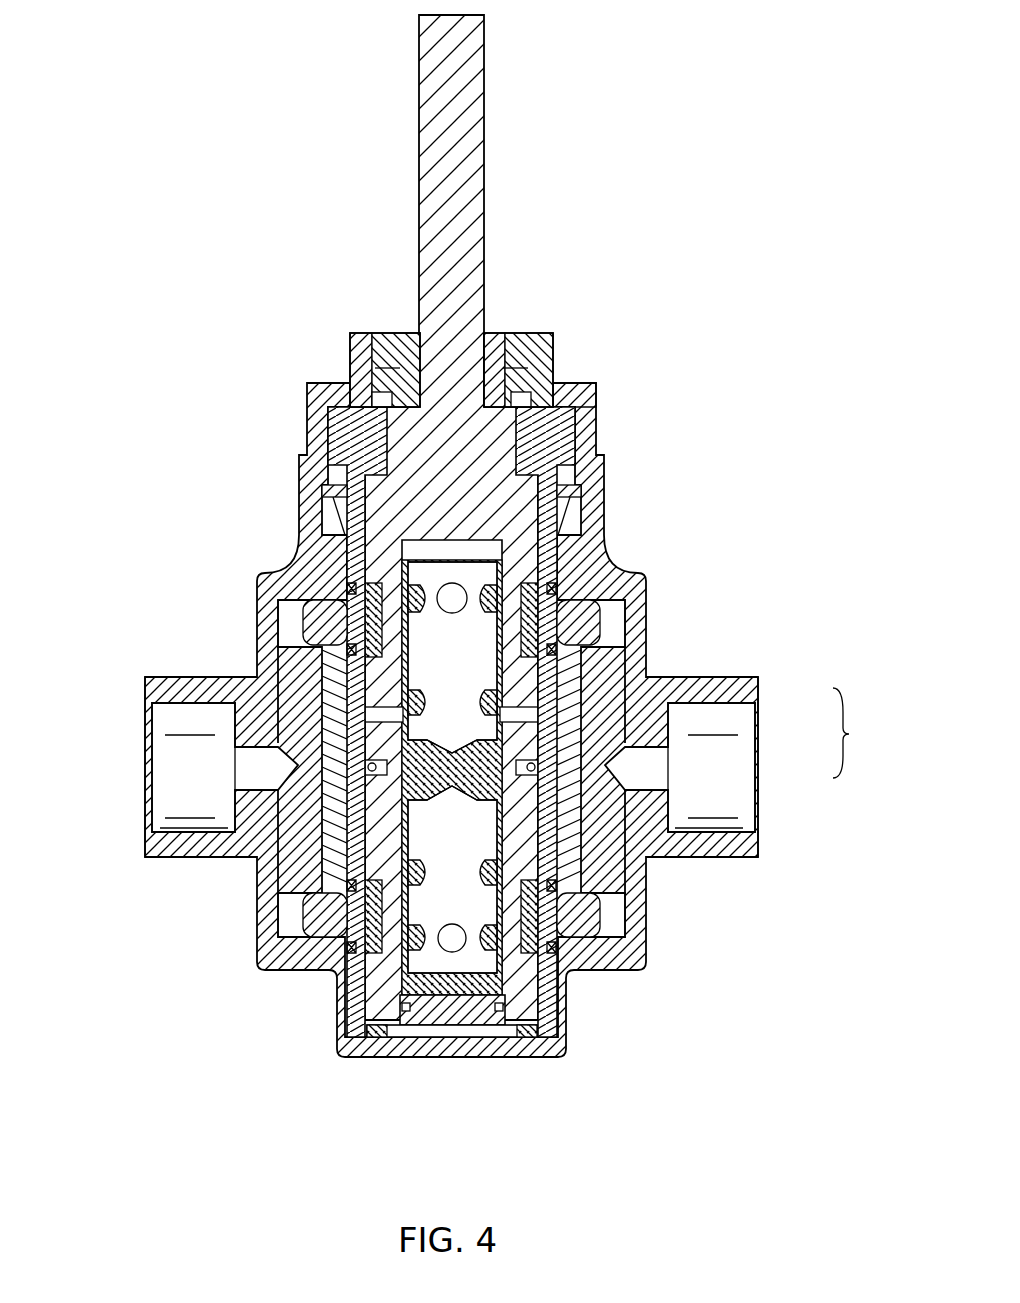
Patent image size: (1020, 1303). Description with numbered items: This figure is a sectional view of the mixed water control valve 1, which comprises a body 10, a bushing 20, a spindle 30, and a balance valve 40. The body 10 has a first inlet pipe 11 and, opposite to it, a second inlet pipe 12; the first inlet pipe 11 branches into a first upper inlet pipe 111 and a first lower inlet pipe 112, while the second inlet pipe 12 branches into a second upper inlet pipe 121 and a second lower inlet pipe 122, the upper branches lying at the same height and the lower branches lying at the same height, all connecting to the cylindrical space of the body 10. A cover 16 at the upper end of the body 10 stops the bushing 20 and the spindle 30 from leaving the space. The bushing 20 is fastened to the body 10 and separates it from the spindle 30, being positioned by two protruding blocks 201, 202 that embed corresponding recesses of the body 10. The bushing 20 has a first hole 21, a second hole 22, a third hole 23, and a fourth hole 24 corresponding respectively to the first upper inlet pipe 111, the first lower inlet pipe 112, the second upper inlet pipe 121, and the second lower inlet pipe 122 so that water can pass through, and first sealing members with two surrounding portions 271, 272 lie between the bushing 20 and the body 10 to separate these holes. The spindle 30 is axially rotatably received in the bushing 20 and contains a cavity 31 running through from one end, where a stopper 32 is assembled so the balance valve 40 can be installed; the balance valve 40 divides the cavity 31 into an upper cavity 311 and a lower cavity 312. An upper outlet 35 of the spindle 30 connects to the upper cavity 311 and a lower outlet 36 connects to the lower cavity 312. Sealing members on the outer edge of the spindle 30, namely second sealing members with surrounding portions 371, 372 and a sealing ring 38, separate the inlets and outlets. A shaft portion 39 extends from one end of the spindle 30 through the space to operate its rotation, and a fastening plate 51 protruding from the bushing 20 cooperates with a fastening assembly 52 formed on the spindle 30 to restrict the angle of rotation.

The mixed water control valve 1 is at (640, 222).
The body 10 is at (545, 1062).
The first inlet pipe 11 is at (172, 808).
The second inlet pipe 12 is at (715, 808).
The cover 16 is at (575, 385).
The bushing 20 is at (355, 528).
The protruding block 201 is at (330, 468).
The protruding block 202 is at (560, 482).
The first hole 21 is at (315, 628).
The second hole 22 is at (330, 925).
The third hole 23 is at (595, 612).
The fourth hole 24 is at (590, 925).
The surrounding portion 271 is at (350, 590).
The surrounding portion 272 is at (350, 652).
The spindle 30 is at (495, 427).
The cavity 31 is at (859, 733).
The upper cavity 311 is at (465, 720).
The lower cavity 312 is at (452, 828).
The stopper 32 is at (452, 1030).
The upper outlet 35 is at (362, 712).
The lower outlet 36 is at (372, 800).
The surrounding portion 371 is at (562, 586).
The surrounding portion 372 is at (565, 650).
The sealing ring 38 is at (375, 772).
The shaft portion 39 is at (462, 102).
The balance valve 40 is at (375, 1040).
The fastening plate 51 is at (358, 345).
The fastening assembly 52 is at (520, 333).
The first upper inlet pipe 111 is at (325, 598).
The first lower inlet pipe 112 is at (300, 952).
The second upper inlet pipe 121 is at (592, 582).
The second lower inlet pipe 122 is at (592, 952).